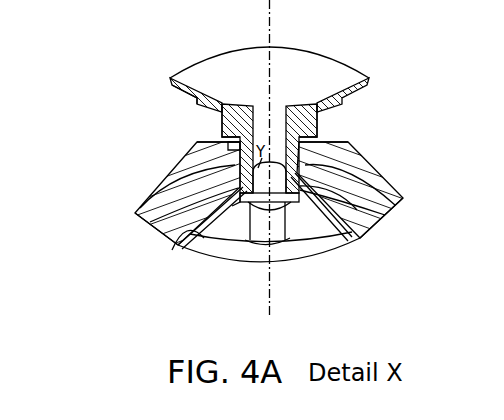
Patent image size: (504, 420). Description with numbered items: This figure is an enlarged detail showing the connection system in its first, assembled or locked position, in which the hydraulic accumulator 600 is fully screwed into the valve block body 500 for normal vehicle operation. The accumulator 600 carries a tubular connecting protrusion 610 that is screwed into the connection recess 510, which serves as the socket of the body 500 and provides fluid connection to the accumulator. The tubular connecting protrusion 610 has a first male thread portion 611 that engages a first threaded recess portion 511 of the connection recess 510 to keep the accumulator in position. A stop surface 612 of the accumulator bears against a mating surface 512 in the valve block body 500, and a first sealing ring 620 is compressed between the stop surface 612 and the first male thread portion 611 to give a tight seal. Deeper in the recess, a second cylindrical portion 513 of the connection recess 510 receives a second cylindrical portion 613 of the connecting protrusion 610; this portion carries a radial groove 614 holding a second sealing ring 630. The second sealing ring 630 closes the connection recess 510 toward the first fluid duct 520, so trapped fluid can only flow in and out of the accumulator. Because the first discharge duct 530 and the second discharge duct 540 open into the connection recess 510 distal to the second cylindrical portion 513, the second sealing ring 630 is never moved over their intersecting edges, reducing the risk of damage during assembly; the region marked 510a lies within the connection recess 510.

The hydraulic accumulator 600 is at (269, 77).
The stop surface 612 is at (193, 86).
The mating surface 512 is at (319, 134).
The first sealing ring 620 is at (190, 136).
The first male thread portion 611 is at (189, 142).
The tubular connecting protrusion 610 is at (196, 165).
The second cylindrical portion 613 is at (190, 176).
The radial groove 614 is at (237, 203).
The second sealing ring 630 is at (230, 238).
The first discharge duct 530 is at (173, 240).
The first fluid duct 520 is at (282, 262).
The connection recess 510 is at (297, 222).
The first threaded recess portion 511 is at (348, 142).
The second cylindrical portion 513 is at (395, 203).
The second discharge duct 540 is at (368, 234).
The valve block body 500 is at (330, 232).
The body portion 510a is at (365, 263).